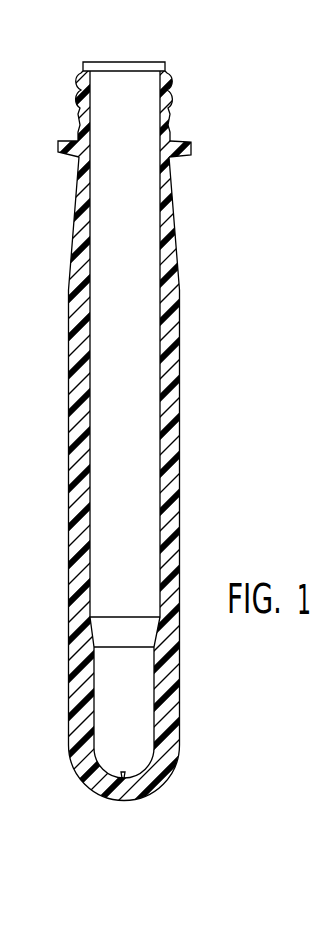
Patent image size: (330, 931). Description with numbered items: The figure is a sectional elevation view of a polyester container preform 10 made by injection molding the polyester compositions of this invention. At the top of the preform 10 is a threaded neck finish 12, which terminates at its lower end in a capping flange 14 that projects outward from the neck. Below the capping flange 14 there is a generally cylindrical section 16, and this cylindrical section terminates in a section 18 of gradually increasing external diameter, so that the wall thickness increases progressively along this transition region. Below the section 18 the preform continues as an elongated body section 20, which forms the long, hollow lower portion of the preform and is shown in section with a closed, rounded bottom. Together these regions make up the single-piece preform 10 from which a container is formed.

The polyester container preform 10 is at (184, 333).
The threaded neck finish 12 is at (168, 82).
The capping flange 14 is at (178, 139).
The generally cylindrical section 16 is at (176, 175).
The section of gradually increasing external diameter 18 is at (178, 220).
The elongated body section 20 is at (178, 497).